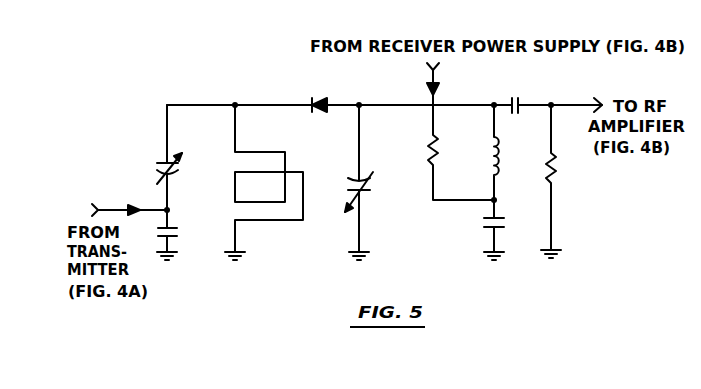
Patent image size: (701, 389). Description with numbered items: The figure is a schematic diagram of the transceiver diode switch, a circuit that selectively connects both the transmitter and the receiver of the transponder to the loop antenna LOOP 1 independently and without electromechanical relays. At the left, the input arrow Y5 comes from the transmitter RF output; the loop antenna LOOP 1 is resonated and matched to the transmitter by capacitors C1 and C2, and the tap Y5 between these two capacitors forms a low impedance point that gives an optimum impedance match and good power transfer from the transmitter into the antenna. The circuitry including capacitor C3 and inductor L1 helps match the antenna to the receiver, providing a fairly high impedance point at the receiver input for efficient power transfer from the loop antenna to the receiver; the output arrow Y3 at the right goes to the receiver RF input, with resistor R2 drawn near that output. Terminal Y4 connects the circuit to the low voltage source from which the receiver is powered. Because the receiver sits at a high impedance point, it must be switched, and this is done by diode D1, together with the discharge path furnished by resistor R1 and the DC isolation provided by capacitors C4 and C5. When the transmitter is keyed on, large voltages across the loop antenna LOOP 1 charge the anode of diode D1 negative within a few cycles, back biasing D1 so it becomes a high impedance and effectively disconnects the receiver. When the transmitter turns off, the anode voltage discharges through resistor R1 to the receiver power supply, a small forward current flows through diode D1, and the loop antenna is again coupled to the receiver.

The capacitor C1 is at (160, 157).
The capacitor C2 is at (182, 235).
The capacitor C3 is at (368, 182).
The capacitor C4 is at (508, 230).
The capacitor C5 is at (518, 95).
The diode D1 is at (317, 93).
The resistor R1 is at (461, 152).
The resistor R2 is at (563, 181).
The inductor L1 is at (510, 152).
The output terminal Y3 is at (576, 94).
The terminal Y4 is at (417, 82).
The tap Y5 is at (119, 200).
The LOOP antenna 1 is at (284, 182).